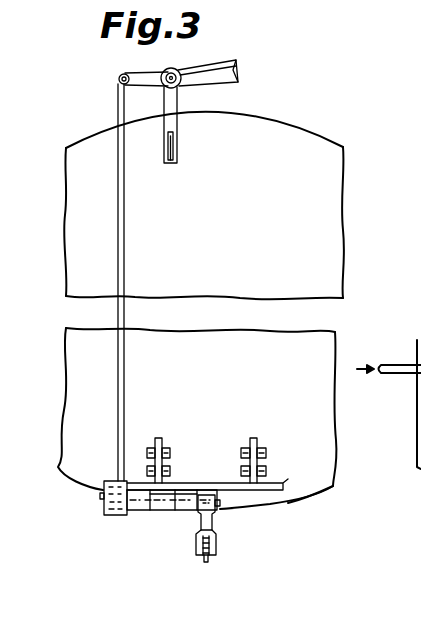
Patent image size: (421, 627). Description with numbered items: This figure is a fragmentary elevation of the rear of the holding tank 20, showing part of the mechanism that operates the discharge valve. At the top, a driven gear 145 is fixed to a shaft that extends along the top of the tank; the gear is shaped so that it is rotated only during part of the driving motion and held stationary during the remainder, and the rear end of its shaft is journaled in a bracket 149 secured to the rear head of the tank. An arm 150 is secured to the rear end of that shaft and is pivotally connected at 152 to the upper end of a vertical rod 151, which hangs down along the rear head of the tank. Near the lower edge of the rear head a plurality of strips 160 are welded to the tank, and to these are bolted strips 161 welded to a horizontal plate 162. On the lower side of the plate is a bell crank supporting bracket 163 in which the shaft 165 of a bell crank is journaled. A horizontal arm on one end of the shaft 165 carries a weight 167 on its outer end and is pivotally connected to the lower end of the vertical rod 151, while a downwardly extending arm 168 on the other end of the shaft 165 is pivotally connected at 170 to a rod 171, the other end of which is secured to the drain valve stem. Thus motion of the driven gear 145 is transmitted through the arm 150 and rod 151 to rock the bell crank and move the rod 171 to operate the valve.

The holding tank 20 is at (78, 235).
The driven gear 145 is at (239, 72).
The bracket 149 is at (178, 104).
The arm 150 is at (147, 76).
The vertical rod 151 is at (125, 218).
The pivotal connection 152 is at (118, 81).
The strips 160 is at (255, 443).
The strips 161 is at (260, 444).
The horizontal plate 162 is at (285, 483).
The bell crank supporting bracket 163 is at (139, 509).
The shaft 165 is at (167, 510).
The weight 167 is at (104, 513).
The downwardly extending arm 168 is at (213, 527).
The pivotal connection 170 is at (217, 553).
The rod 171 is at (206, 563).